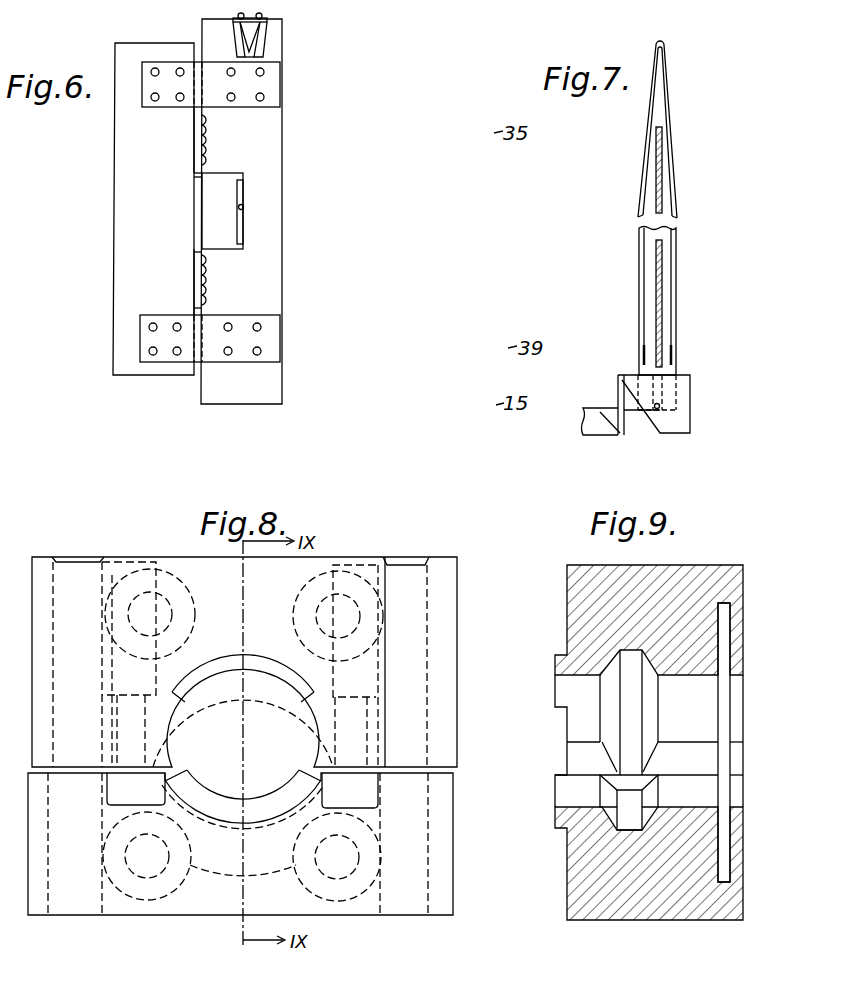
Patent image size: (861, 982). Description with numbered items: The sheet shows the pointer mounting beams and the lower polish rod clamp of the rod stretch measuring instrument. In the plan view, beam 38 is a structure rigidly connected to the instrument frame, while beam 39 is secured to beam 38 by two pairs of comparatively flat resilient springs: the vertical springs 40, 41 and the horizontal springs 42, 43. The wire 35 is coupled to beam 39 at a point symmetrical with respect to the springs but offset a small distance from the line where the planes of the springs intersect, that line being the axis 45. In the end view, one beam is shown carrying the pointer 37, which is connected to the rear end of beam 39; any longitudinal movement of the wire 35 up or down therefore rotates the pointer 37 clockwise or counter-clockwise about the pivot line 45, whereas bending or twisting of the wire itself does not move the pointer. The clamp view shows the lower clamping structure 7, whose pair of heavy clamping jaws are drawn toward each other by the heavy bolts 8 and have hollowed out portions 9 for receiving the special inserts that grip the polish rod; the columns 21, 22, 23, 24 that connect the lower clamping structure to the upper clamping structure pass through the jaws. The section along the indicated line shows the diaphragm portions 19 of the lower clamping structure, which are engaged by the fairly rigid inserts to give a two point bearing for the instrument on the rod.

In FIG. 8, the lower clamping structure 7 is at (457, 637).
In FIG. 9, the lower clamping structure 7 is at (582, 589).
In FIG. 8, the heavy bolts 8 is at (418, 719).
In FIG. 9, the hollowed out portions 9 is at (600, 680).
In FIG. 9, the diaphragm portions 19 is at (730, 676).
In FIG. 8, the column 21 is at (362, 905).
In FIG. 8, the column 22 is at (360, 573).
In FIG. 8, the column 23 is at (165, 565).
In FIG. 8, the column 24 is at (128, 892).
In FIG. 6, the wire 35 is at (243, 207).
In FIG. 7, the wire 35 is at (661, 186).
In FIG. 6, the pointer 37 is at (268, 40).
In FIG. 7, the pointer 37 is at (670, 95).
In FIG. 6, the beam 38 is at (116, 236).
In FIG. 7, the beam 38 is at (607, 432).
In FIG. 6, the beam 39 is at (283, 270).
In FIG. 7, the beam 39 is at (690, 390).
In FIG. 6, the vertical spring 40 is at (207, 145).
In FIG. 6, the vertical spring 41 is at (207, 285).
In FIG. 6, the horizontal spring 42 is at (161, 315).
In FIG. 6, the horizontal spring 43 is at (171, 108).
In FIG. 7, the axis 45 is at (626, 414).